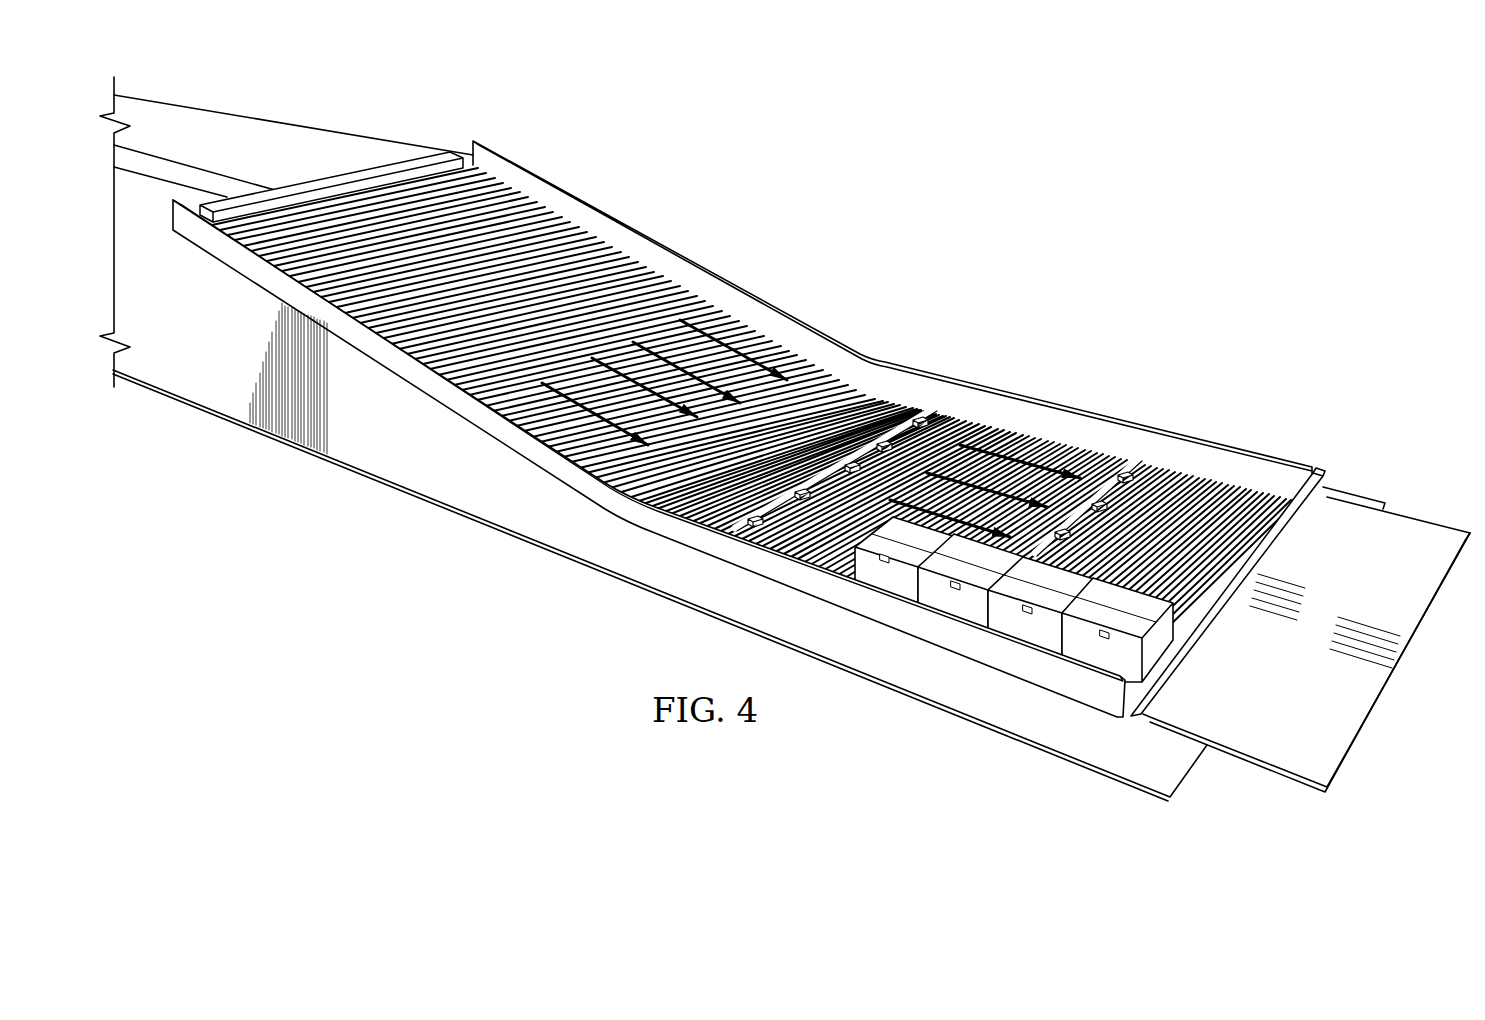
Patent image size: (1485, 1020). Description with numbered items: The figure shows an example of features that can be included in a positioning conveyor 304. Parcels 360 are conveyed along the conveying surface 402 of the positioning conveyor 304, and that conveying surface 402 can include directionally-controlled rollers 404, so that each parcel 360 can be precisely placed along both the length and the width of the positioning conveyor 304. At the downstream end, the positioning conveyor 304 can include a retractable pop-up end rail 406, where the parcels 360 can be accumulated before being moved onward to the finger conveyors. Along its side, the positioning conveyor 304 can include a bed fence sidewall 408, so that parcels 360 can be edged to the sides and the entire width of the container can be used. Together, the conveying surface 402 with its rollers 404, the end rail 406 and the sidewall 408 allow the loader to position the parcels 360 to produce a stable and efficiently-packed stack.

The positioning conveyor 304 is at (791, 471).
The conveying surface 402 is at (620, 254).
The directionally-controlled rollers 404 is at (913, 403).
The retractable pop-up end rail 406 is at (1293, 480).
The bed fence sidewall 408 is at (410, 385).
The parcels 360 is at (1153, 645).